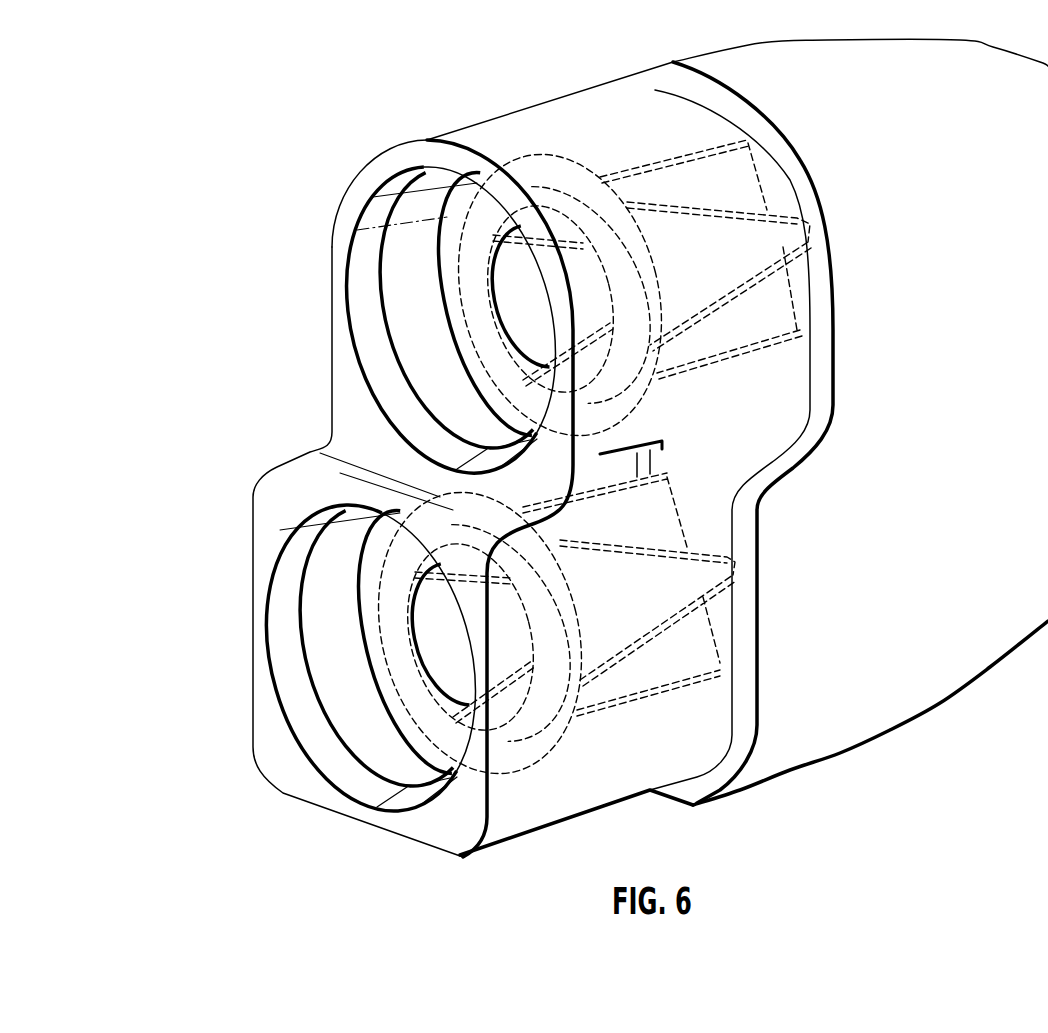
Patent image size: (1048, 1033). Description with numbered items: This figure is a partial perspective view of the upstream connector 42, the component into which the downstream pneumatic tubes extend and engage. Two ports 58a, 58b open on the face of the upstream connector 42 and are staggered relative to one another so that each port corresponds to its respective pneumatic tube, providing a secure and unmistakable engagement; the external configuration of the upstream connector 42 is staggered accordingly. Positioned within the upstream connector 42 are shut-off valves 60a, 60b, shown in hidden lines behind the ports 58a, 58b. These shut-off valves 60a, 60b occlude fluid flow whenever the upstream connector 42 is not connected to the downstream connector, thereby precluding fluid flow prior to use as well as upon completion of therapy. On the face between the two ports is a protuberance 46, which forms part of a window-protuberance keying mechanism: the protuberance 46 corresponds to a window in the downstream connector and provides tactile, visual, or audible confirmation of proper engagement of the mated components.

The upstream connector 42 is at (262, 712).
The protuberance 46 is at (645, 466).
The port 58a is at (517, 285).
The port 58b is at (438, 636).
The shut-off valve 60a is at (579, 158).
The shut-off valve 60b is at (567, 730).